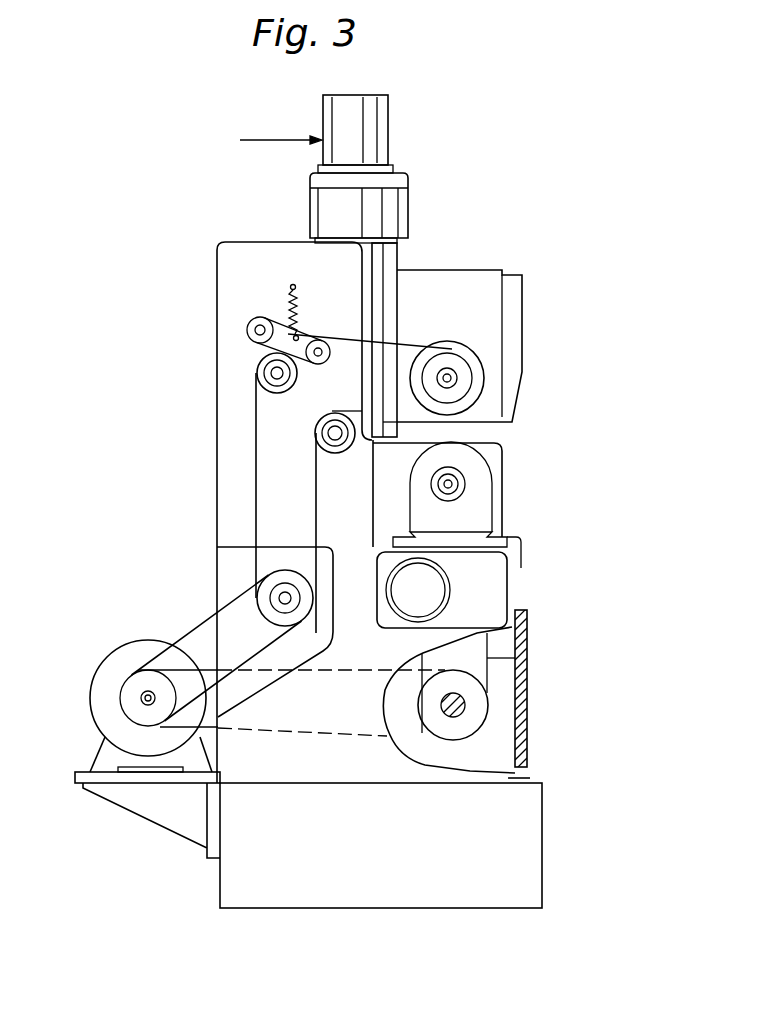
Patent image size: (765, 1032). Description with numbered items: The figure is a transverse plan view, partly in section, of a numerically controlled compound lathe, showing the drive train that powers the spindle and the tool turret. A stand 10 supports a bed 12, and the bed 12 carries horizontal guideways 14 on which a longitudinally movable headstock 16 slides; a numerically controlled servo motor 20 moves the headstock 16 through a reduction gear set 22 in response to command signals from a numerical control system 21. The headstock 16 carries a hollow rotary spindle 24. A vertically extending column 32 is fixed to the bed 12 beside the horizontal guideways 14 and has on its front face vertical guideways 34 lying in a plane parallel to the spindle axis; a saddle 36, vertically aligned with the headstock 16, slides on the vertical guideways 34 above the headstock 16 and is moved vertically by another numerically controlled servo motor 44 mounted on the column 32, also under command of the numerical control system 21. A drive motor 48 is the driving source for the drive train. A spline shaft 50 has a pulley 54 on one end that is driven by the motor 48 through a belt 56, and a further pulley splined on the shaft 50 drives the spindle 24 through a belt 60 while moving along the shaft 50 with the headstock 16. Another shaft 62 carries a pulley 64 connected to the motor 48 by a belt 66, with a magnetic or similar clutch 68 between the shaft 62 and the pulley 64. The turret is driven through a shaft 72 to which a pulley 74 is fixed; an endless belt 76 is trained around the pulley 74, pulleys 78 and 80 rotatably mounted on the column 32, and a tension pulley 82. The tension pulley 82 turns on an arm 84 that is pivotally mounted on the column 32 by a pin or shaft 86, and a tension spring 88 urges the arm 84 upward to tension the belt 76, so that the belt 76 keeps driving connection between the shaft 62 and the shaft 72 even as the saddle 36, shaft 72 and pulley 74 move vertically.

The stand 10 is at (527, 848).
The bed 12 is at (527, 778).
The horizontal guideways 14 is at (502, 542).
The headstock 16 is at (483, 517).
The numerically controlled servo motor 20 is at (438, 593).
The numerical control system 21 is at (161, 129).
The reduction gear set 22 is at (487, 613).
The hollow rotary spindle 24 is at (460, 487).
The column 32 is at (215, 305).
The vertical guideways 34 is at (373, 257).
The saddle 36 is at (480, 283).
The numerically controlled servo motor 44 is at (380, 139).
The drive motor 48 is at (110, 655).
The spline shaft 50 is at (465, 707).
The pulley 54 is at (467, 725).
The belt 56 is at (323, 733).
The belt 60 is at (527, 660).
The shaft 62 is at (278, 605).
The pulley 64 is at (263, 580).
The belt 66 is at (190, 632).
The clutch 68 is at (286, 595).
The shaft 72 is at (444, 370).
The pulley 74 is at (458, 360).
The belt 76 is at (256, 480).
The pulley 78 is at (283, 393).
The pulley 80 is at (337, 453).
The tension pulley 82 is at (320, 365).
The arm 84 is at (322, 343).
The pin or shaft 86 is at (259, 318).
The tension spring 88 is at (298, 290).